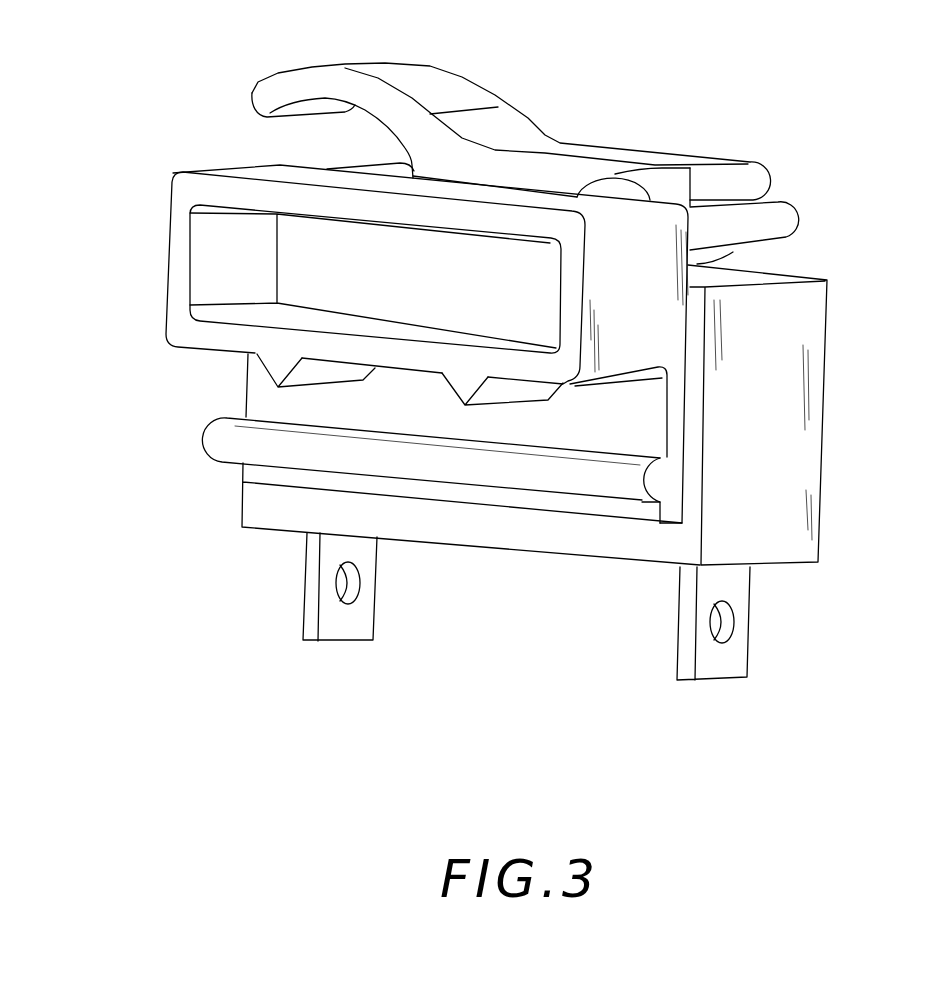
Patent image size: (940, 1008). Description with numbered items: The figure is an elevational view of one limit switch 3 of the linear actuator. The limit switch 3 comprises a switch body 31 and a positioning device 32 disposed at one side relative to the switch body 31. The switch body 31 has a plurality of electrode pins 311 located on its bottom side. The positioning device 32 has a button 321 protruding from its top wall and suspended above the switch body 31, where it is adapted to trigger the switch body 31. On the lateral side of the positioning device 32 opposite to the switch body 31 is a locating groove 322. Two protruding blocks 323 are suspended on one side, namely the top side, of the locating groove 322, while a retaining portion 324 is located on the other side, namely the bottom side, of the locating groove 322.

The limit switch 3 is at (847, 248).
The switch body 31 is at (806, 402).
The electrode pin 311 is at (741, 657).
The positioning device 32 is at (172, 245).
The button 321 is at (435, 72).
The locating groove 322 is at (285, 400).
The protruding block 323 is at (256, 355).
The retaining portion 324 is at (650, 503).